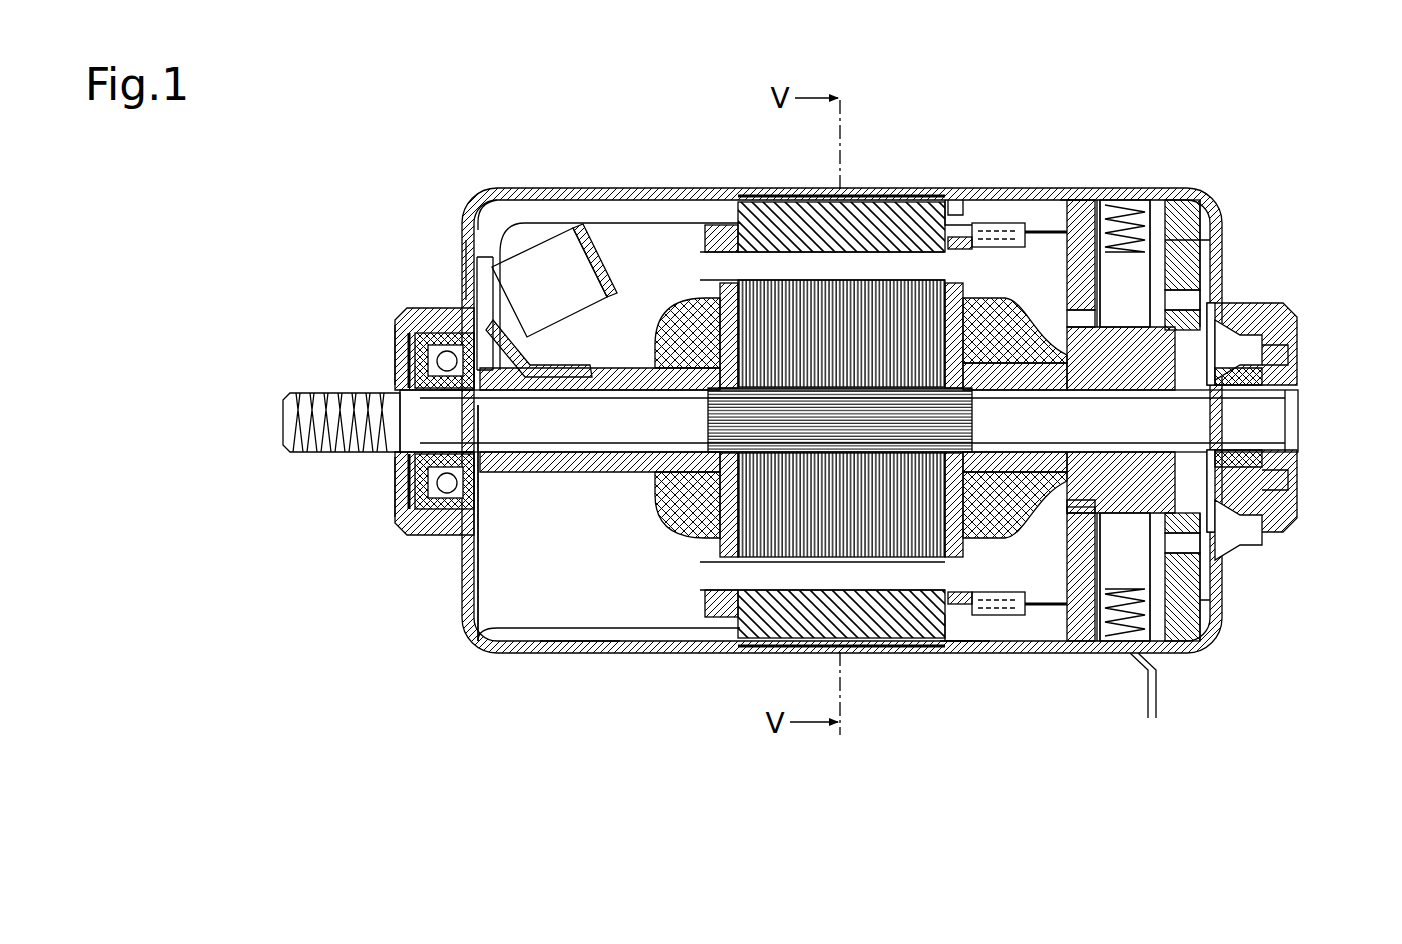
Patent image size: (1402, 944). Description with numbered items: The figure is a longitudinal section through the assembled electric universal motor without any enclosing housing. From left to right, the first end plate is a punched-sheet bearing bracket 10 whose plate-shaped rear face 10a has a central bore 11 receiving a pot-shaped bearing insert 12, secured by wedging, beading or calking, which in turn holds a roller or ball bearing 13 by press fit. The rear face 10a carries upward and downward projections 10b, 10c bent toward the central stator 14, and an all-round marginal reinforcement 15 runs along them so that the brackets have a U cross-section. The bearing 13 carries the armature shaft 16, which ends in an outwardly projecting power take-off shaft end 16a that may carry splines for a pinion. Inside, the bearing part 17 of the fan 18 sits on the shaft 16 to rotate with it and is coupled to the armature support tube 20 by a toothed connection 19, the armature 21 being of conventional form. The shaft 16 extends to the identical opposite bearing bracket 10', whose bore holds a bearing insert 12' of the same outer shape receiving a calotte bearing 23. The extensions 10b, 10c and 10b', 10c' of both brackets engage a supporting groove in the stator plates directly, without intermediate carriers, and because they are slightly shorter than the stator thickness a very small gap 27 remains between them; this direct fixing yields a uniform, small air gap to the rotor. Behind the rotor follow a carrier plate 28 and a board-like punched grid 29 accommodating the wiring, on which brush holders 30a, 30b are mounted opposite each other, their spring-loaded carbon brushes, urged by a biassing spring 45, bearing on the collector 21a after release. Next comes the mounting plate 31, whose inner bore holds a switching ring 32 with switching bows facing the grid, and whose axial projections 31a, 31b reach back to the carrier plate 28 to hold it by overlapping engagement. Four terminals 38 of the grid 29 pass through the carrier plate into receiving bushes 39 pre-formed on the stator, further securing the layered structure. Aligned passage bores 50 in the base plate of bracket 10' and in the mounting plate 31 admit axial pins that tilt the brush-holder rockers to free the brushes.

The first bearing bracket 10 is at (763, 367).
The plate-shaped rear face 10a is at (462, 278).
The projection 10b is at (557, 209).
The projection 10b' is at (967, 148).
The second bearing bracket 10' is at (1082, 141).
The projection 10c is at (573, 689).
The projection 10c' is at (954, 690).
The central bore 11 is at (445, 535).
The first pot-shaped bearing insert 12 is at (418, 459).
The bearing insert 12' is at (1292, 383).
The roller or ball bearing 13 is at (397, 345).
The stator 14 is at (755, 628).
The marginal reinforcement 15 is at (503, 214).
The armature shaft 16 is at (525, 410).
The shaft end 16a is at (347, 455).
The bearing part 17 is at (613, 297).
The fan 18 is at (600, 353).
The toothed connection 19 is at (630, 262).
The armature support tube 20 is at (612, 476).
The armature 21 is at (862, 325).
The collector 21a is at (1225, 305).
The bearing 23 is at (1298, 362).
The gap 27 is at (840, 198).
The carrier plate 28 is at (1070, 655).
The board-like grid 29 is at (1130, 275).
The brush holder 30a is at (1215, 188).
The brush holder 30b is at (1215, 655).
The mounting plate 31 is at (1222, 625).
The projection 31a is at (1108, 212).
The projection 31b is at (1115, 655).
The switching ring 32 is at (1225, 540).
The terminal 38 is at (1048, 248).
The receiving bush 39 is at (1000, 248).
The biassing spring 45 is at (1172, 238).
The passage bore 50 is at (1215, 237).